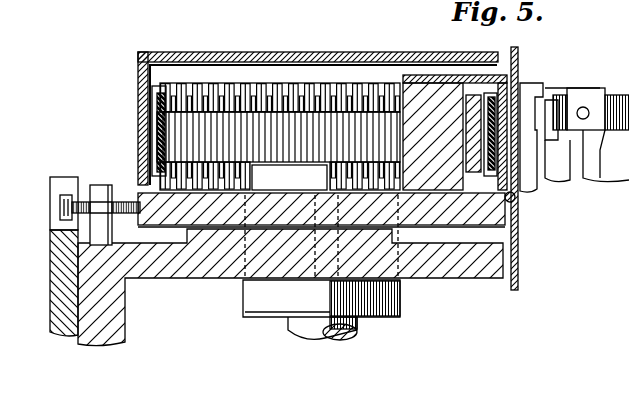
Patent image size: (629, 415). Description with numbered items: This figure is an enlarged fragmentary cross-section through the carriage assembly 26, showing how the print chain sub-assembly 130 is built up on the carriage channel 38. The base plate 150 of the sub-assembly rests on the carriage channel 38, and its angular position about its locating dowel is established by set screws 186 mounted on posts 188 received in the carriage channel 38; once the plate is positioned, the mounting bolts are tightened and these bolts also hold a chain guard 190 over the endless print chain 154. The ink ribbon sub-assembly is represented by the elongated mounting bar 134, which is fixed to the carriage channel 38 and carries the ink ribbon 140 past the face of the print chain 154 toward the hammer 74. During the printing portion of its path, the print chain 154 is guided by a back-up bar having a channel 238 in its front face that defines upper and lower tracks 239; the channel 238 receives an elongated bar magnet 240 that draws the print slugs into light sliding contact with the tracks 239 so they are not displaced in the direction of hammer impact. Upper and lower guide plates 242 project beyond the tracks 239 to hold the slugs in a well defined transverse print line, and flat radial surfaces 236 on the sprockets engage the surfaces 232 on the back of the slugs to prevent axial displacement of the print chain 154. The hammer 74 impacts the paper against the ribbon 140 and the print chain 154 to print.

The print chain sub-assembly 130 is at (322, 46).
The chain guard 190 is at (172, 54).
The print chain 154 is at (186, 103).
The flat radial surfaces 236 is at (340, 78).
The guide plates 242 is at (403, 82).
The surfaces 232 is at (425, 100).
The bar magnet 240 is at (466, 128).
The channel 238 is at (488, 97).
The tracks 239 is at (497, 78).
The ink ribbon 140 is at (519, 71).
The hammer 74 is at (538, 90).
The carriage assembly 26 is at (77, 151).
The base plate 150 is at (146, 196).
The posts 188 is at (101, 190).
The set screws 186 is at (60, 207).
The mounting bar 134 is at (55, 284).
The carriage channel 38 is at (225, 290).